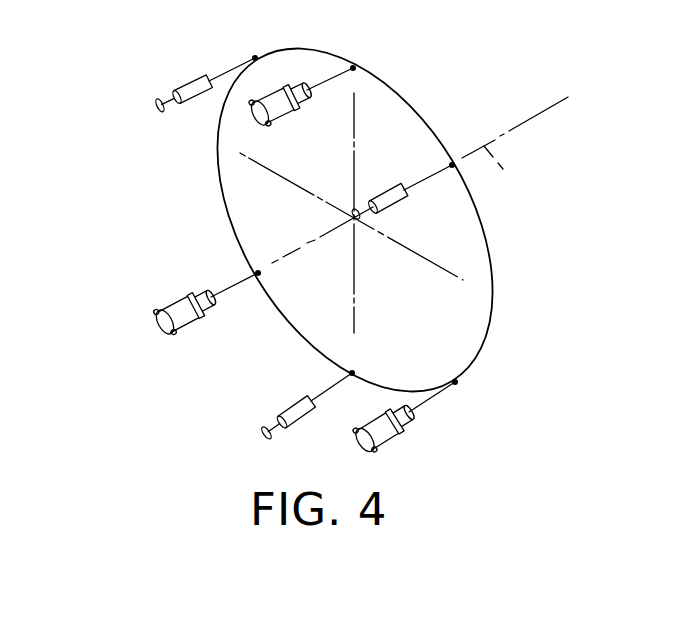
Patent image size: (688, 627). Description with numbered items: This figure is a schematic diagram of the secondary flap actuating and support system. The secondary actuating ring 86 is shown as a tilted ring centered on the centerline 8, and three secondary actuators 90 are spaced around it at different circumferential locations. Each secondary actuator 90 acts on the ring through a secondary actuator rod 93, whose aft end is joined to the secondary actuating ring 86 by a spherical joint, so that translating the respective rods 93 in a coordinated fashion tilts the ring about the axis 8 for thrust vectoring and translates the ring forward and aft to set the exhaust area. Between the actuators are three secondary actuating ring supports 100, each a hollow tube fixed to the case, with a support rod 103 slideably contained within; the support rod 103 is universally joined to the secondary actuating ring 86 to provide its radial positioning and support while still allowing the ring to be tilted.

The centerline 8 is at (505, 168).
The secondary actuating ring 86 is at (497, 252).
The secondary actuators 90 is at (288, 90).
The secondary actuator rod 93 is at (340, 76).
The secondary actuating ring support 100 is at (187, 72).
The support rod 103 is at (446, 170).